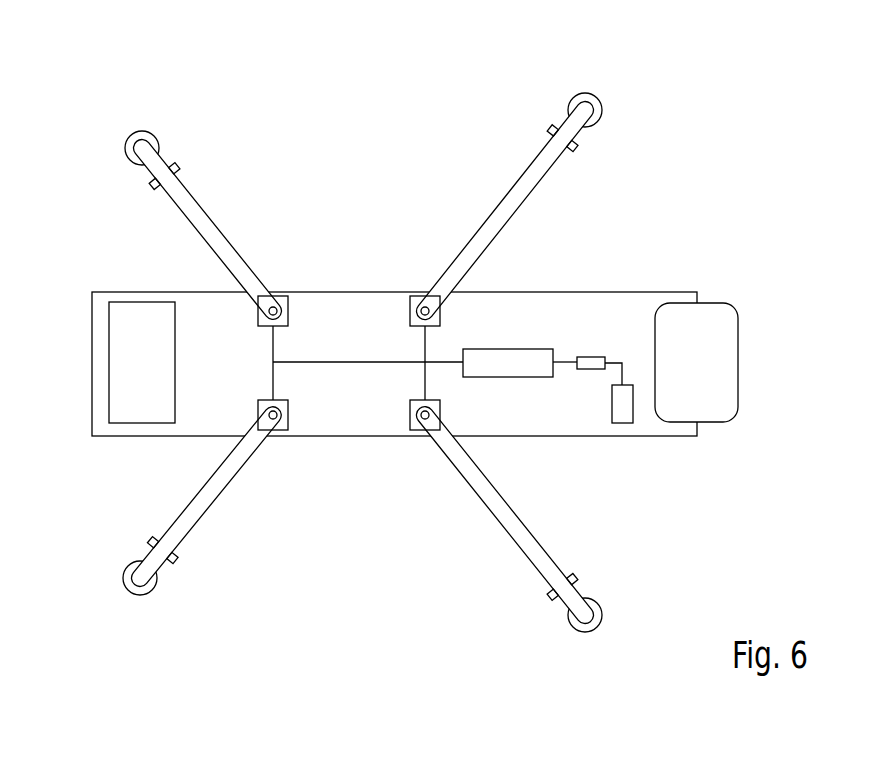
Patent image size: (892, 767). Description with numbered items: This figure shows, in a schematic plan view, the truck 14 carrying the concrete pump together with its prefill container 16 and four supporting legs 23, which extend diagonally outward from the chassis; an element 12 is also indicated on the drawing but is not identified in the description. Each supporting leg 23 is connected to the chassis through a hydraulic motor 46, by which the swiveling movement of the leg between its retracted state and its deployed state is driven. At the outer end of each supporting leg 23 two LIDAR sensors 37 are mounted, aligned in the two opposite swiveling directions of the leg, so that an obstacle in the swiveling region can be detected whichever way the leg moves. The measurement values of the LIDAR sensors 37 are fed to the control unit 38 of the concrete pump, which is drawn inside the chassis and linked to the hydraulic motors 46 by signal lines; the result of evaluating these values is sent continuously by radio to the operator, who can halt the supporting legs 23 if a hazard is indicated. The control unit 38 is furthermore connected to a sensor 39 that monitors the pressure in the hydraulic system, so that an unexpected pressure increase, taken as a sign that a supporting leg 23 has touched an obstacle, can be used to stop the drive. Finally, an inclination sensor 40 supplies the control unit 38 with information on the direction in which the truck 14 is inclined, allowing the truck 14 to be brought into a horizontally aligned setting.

The vehicle body 12 is at (637, 316).
The truck 14 is at (122, 358).
The prefill container 16 is at (725, 360).
The supporting leg 23 is at (222, 214).
The LIDAR sensor 37 is at (168, 152).
The control unit 38 is at (512, 355).
The sensor 39 is at (590, 355).
The inclination sensor 40 is at (623, 415).
The hydraulic motor 46 is at (290, 313).